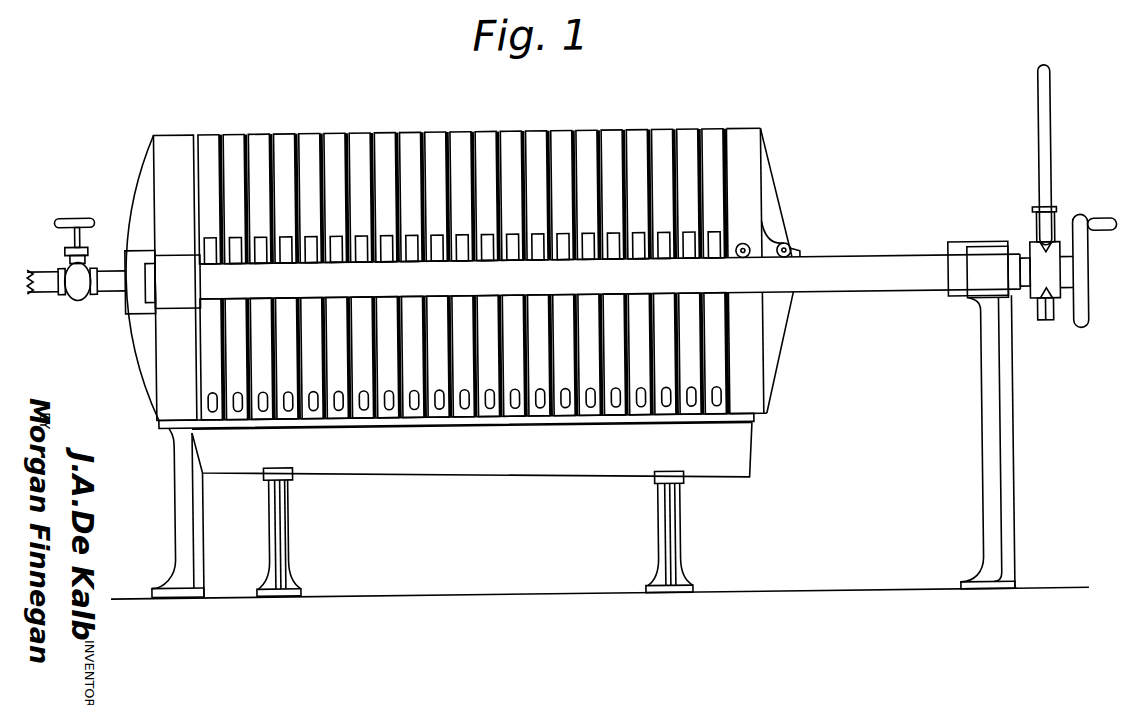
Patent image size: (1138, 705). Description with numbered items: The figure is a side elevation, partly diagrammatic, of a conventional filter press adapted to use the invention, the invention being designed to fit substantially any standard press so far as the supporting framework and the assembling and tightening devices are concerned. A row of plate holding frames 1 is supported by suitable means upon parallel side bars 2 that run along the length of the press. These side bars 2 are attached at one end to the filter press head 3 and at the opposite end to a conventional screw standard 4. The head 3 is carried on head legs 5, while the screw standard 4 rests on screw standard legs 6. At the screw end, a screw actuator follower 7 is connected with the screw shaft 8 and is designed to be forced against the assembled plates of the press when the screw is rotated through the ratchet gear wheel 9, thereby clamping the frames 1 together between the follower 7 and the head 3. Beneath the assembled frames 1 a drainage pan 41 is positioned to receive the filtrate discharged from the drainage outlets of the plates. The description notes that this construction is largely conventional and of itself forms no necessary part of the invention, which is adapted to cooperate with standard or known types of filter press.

The plate holding frames 1 is at (312, 135).
The parallel side bars 2 is at (853, 283).
The filter press head 3 is at (162, 326).
The screw standard 4 is at (988, 252).
The head legs 5 is at (180, 494).
The screw standard legs 6 is at (990, 457).
The screw actuator follower 7 is at (748, 192).
The screw shaft 8 is at (1024, 264).
The ratchet gear wheel 9 is at (1082, 286).
The drainage pan 41 is at (550, 462).